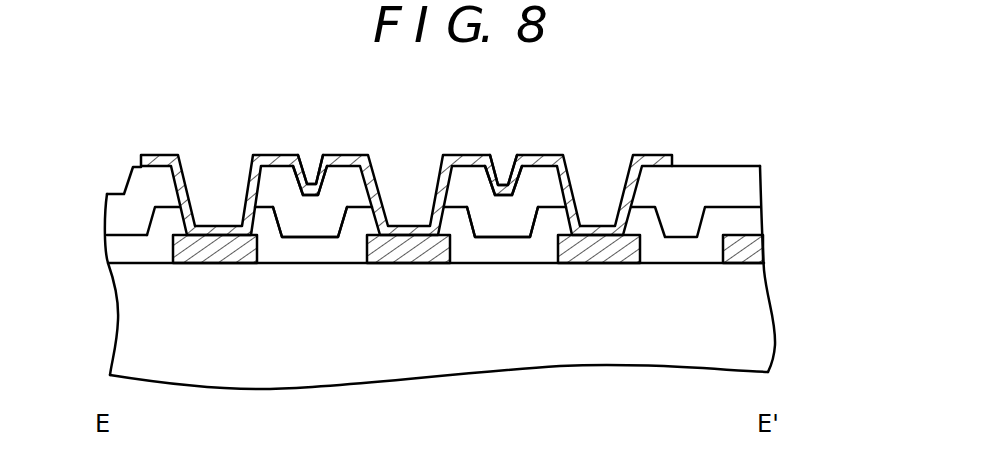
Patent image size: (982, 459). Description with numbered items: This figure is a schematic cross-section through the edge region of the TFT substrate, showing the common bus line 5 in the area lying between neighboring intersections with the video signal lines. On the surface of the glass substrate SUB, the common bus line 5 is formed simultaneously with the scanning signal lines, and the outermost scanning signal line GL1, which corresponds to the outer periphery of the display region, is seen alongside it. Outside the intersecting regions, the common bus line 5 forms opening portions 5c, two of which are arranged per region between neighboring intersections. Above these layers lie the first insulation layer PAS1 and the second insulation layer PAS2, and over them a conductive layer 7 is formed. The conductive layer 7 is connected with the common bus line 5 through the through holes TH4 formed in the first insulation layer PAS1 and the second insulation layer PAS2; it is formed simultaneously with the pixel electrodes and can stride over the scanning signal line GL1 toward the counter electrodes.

The common bus line 5 is at (211, 263).
The opening portions 5c is at (362, 272).
The conductive layer 7 is at (648, 158).
The through holes TH4 is at (258, 190).
The first insulation layer PAS1 is at (133, 252).
The second insulation layer PAS2 is at (122, 212).
The scanning signal line GL1 is at (758, 252).
The glass substrate SUB is at (705, 347).